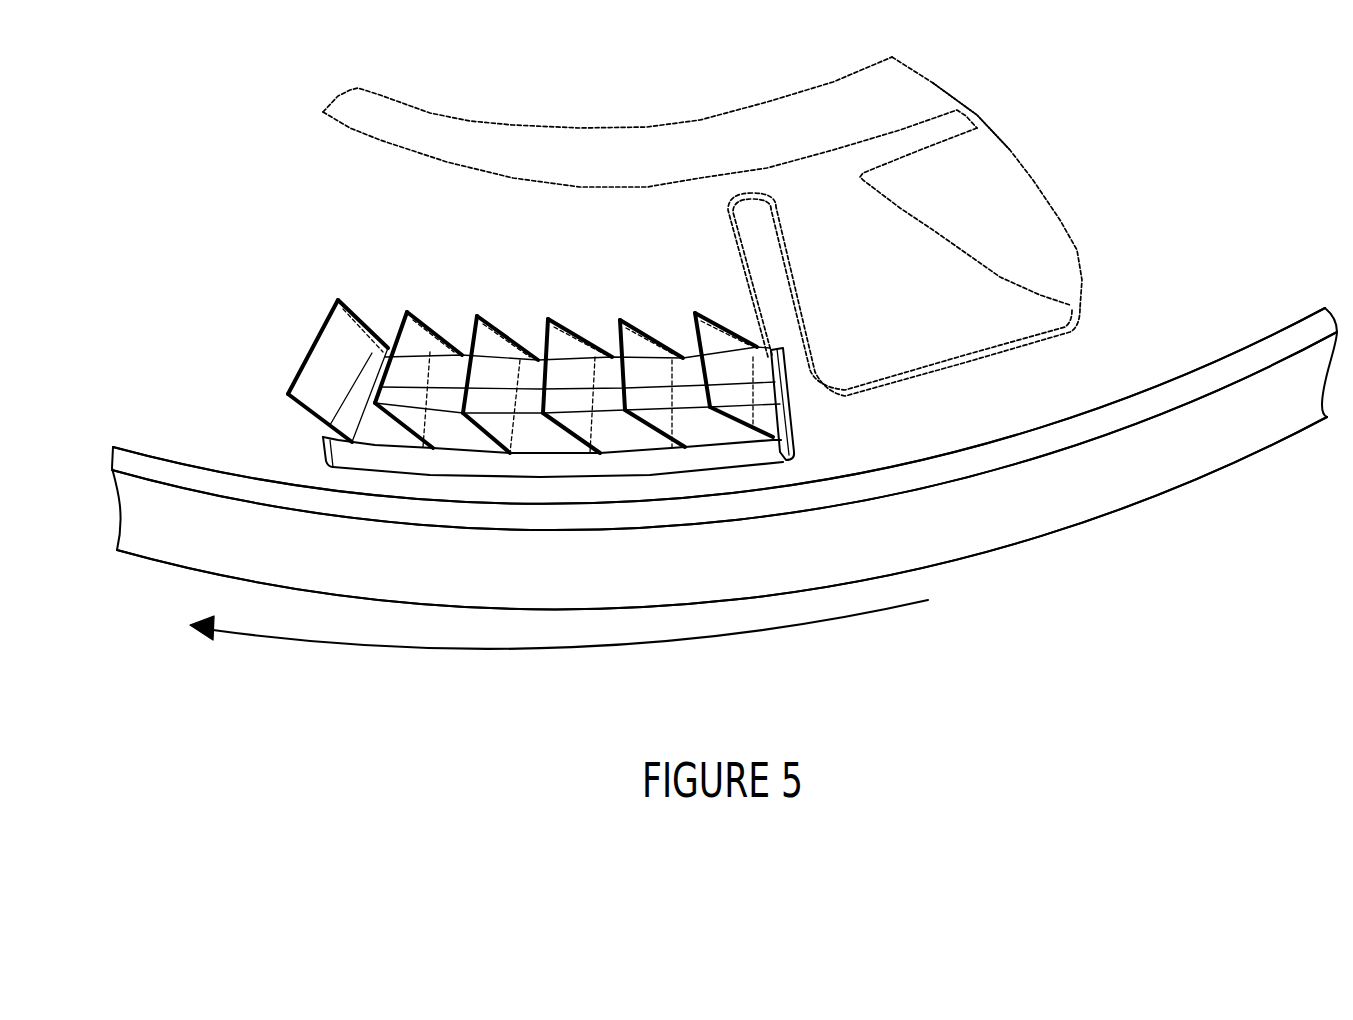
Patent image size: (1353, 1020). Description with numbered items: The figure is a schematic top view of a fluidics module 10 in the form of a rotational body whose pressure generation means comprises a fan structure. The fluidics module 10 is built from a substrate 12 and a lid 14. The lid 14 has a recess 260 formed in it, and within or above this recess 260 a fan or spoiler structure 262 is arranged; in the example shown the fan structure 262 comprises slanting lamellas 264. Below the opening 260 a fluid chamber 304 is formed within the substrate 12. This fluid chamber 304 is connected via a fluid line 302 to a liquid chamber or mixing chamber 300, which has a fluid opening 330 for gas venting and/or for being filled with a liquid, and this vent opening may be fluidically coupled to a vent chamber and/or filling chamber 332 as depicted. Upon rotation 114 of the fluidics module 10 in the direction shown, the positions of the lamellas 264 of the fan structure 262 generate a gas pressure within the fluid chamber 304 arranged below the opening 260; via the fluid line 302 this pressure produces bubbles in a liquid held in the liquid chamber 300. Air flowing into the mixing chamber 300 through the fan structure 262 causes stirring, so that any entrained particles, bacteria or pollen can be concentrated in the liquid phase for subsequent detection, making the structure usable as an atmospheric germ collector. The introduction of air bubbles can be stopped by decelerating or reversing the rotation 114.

The fluidics module 10 is at (1152, 548).
The substrate 12 is at (1100, 467).
The lid 14 is at (1188, 390).
The rotation 114 is at (898, 610).
The recess 260 is at (690, 355).
The fan structure 262 is at (378, 312).
The lamellas 264 is at (422, 312).
The liquid chamber 300 is at (1077, 250).
The fluid line 302 is at (810, 305).
The fluid chamber 304 is at (797, 443).
The fluid opening 330 is at (977, 115).
The vent chamber and/or filling chamber 332 is at (738, 165).